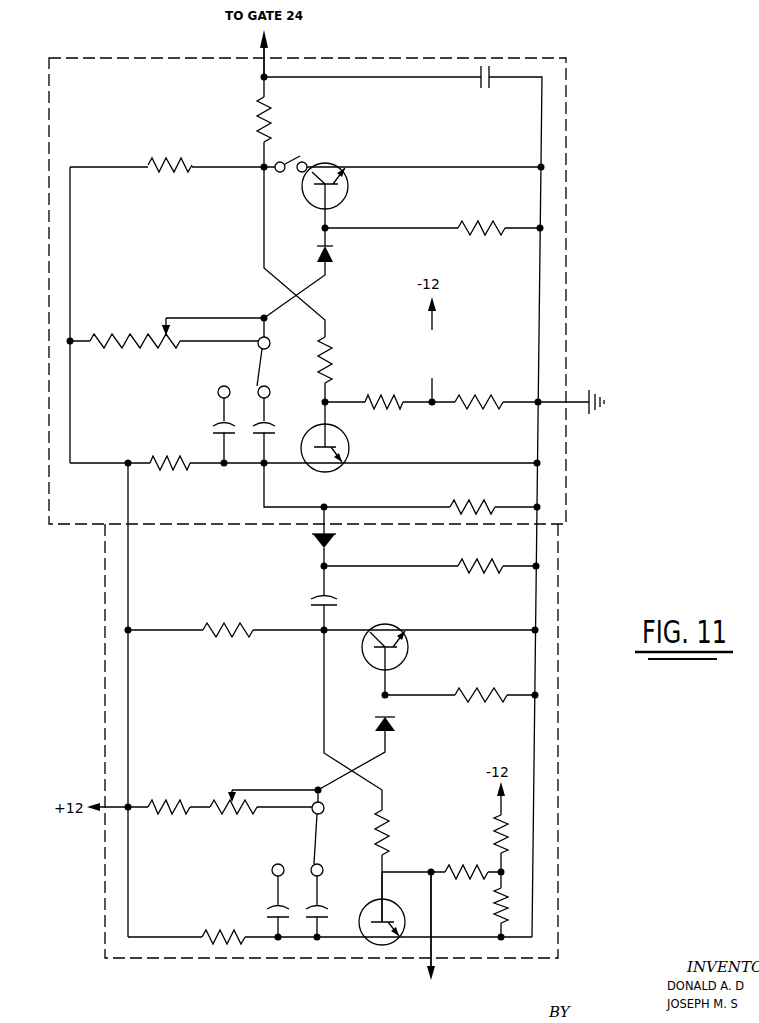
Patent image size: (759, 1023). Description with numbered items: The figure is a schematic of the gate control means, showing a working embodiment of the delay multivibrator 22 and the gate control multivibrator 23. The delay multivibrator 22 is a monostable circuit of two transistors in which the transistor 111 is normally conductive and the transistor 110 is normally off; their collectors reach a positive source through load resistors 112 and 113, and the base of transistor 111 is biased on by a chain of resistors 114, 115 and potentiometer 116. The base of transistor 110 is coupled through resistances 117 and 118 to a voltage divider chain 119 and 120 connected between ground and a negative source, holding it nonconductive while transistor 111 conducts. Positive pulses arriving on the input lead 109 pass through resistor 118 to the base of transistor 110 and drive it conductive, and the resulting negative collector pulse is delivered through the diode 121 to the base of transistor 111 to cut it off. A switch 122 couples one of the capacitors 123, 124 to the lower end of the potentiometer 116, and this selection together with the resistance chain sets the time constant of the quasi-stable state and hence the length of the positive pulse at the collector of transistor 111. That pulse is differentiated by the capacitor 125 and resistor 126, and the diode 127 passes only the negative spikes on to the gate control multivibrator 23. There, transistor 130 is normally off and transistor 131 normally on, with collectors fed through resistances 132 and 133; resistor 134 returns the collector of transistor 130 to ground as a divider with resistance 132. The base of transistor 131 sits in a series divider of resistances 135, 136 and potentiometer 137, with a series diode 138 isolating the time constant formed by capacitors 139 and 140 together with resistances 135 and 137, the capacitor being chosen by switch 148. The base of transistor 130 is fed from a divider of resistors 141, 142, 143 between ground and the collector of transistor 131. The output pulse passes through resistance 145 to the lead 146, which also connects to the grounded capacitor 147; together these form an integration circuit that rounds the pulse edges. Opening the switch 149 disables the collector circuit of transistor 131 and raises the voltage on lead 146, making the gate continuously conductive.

The delay multivibrator 22 is at (558, 870).
The gate control multivibrator 23 is at (567, 233).
The input lead 109 is at (431, 950).
The transistor 110 is at (373, 923).
The transistor 111 is at (392, 627).
The load resistor 112 is at (213, 937).
The load resistor 113 is at (223, 638).
The resistor 114 is at (165, 800).
The resistor 115 is at (483, 690).
The potentiometer 116 is at (225, 820).
The resistance 117 is at (383, 808).
The resistance 118 is at (453, 870).
The voltage divider resistor 119 is at (497, 897).
The voltage divider resistor 120 is at (502, 822).
The diode 121 is at (390, 725).
The switch 122 is at (313, 838).
The capacitor 123 is at (272, 907).
The capacitor 124 is at (322, 906).
The differentiating capacitor 125 is at (320, 597).
The resistor 126 is at (472, 563).
The diode 127 is at (330, 540).
The transistor 130 is at (345, 440).
The transistor 131 is at (349, 187).
The resistance 132 is at (172, 468).
The resistance 133 is at (162, 165).
The resistor 134 is at (469, 506).
The resistance 135 is at (107, 330).
The resistance 136 is at (500, 237).
The potentiometer 137 is at (173, 348).
The series diode 138 is at (334, 262).
The capacitor 139 is at (220, 426).
The capacitor 140 is at (270, 425).
The resistor 141 is at (330, 340).
The resistor 142 is at (377, 395).
The resistor 143 is at (497, 388).
The resistance 145 is at (268, 128).
The lead 146 is at (268, 52).
The capacitor 147 is at (491, 72).
The switch 148 is at (257, 367).
The switch 149 is at (300, 157).